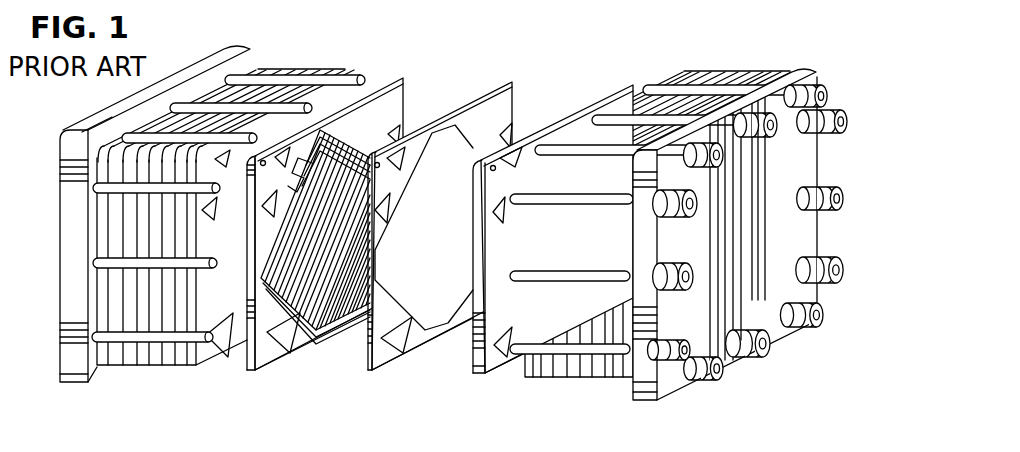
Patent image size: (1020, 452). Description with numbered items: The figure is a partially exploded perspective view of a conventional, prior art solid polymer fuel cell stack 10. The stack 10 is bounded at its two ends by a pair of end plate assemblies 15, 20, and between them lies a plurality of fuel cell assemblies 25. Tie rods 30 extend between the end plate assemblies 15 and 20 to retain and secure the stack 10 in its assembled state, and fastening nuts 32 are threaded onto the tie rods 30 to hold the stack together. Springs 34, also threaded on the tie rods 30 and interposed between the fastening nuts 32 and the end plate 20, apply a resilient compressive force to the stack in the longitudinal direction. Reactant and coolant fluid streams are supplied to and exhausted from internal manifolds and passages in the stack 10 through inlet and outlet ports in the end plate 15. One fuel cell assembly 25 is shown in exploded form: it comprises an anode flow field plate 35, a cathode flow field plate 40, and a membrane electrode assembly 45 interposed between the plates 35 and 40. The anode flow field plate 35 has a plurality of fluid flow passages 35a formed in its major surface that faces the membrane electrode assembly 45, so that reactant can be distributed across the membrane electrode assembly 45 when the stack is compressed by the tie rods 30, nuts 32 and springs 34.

The solid polymer fuel cell stack 10 is at (736, 33).
The end plate assembly 15 is at (112, 113).
The end plate assembly 20 is at (790, 70).
The fuel cell assembly 25 is at (175, 366).
The tie rod 30 is at (249, 92).
The fastening nut 32 is at (834, 134).
The spring 34 is at (767, 358).
The anode flow field plate 35 is at (353, 231).
The fluid flow passages 35a is at (350, 311).
The cathode flow field plate 40 is at (626, 84).
The membrane electrode assembly 45 is at (473, 100).